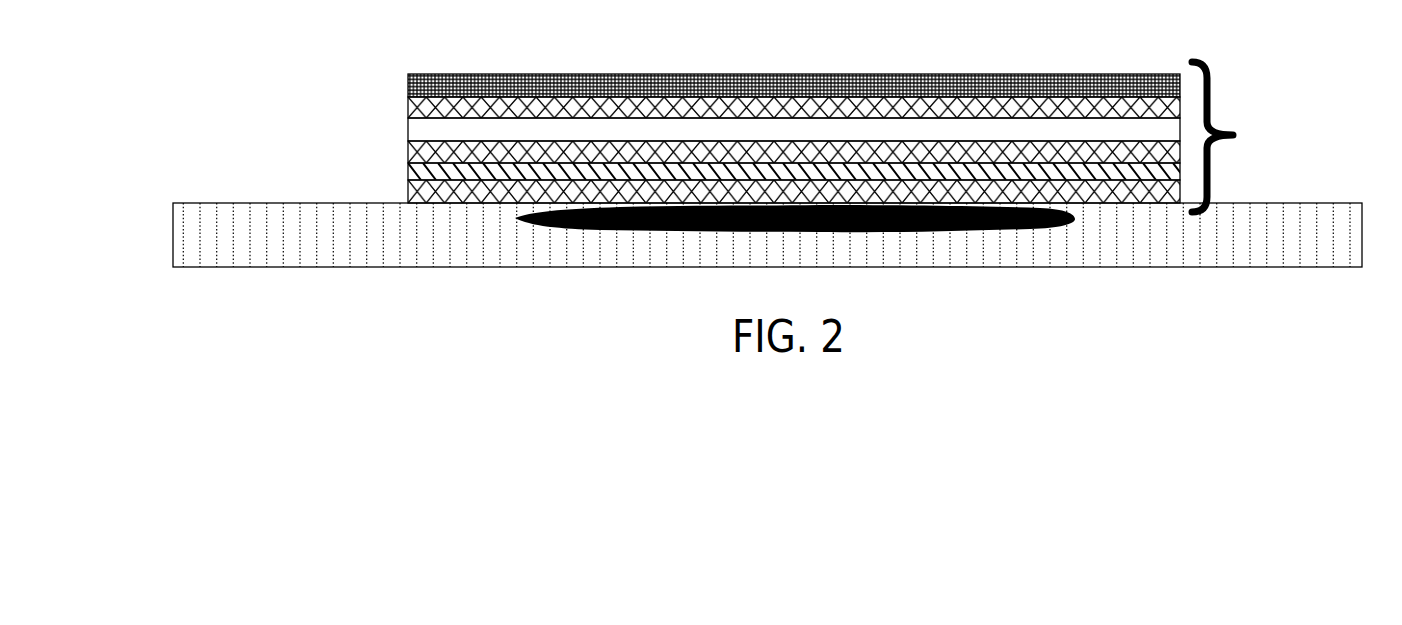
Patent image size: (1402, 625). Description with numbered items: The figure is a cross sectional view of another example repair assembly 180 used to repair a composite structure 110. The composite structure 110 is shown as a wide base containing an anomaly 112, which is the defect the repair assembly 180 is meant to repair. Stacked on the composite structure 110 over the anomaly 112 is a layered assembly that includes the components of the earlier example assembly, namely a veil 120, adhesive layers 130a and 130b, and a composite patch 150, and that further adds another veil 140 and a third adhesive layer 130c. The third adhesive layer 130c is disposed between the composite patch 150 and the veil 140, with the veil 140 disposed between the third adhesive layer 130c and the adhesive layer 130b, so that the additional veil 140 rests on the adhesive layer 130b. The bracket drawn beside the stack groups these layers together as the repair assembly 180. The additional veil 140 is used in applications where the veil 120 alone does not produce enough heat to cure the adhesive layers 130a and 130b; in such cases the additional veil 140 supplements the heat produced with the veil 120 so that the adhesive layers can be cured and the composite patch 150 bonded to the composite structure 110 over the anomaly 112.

The composite structure 110 is at (173, 233).
The anomaly 112 is at (977, 229).
The veil 120 is at (408, 172).
The adhesive layer 130a is at (408, 192).
The adhesive layer 130b is at (408, 152).
The third adhesive layer 130c is at (408, 106).
The veil 140 is at (408, 129).
The composite patch 150 is at (408, 82).
The repair assembly 180 is at (1239, 126).